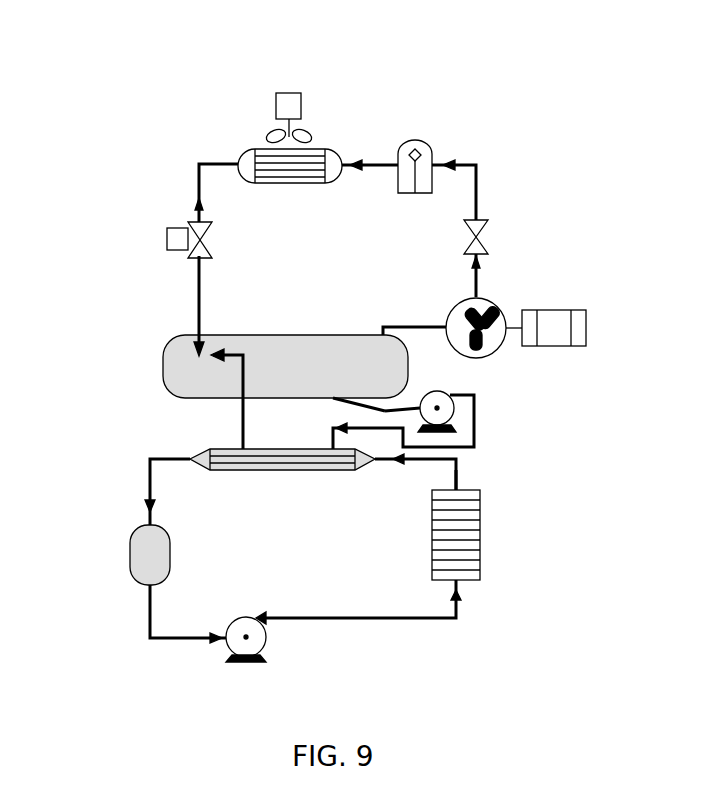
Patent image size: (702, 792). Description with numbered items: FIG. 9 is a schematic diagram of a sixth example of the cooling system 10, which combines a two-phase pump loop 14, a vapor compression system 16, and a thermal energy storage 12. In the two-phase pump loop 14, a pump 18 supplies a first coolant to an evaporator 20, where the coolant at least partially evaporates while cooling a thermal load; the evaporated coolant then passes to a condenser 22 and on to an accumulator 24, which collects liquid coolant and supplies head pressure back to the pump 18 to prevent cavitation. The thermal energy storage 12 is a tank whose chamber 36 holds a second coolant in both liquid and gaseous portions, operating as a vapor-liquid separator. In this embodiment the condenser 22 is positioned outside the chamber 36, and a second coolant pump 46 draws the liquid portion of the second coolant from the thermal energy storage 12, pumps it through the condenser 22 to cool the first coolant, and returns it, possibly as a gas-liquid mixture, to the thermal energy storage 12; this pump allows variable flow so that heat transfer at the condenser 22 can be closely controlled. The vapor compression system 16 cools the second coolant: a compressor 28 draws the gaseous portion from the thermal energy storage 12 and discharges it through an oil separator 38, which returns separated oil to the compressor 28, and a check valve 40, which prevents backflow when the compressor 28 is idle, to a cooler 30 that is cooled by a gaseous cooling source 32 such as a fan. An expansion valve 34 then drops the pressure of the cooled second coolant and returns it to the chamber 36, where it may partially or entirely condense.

The cooling system 10 is at (98, 172).
The thermal energy storage 12 is at (163, 374).
The two-phase pump loop 14 is at (125, 638).
The vapor compression system 16 is at (176, 146).
The pump 18 is at (268, 640).
The evaporator 20 is at (478, 578).
The condenser 22 is at (207, 470).
The accumulator 24 is at (130, 560).
The compressor 28 is at (498, 304).
The cooler 30 is at (322, 150).
The gaseous cooling source 32 is at (302, 94).
The expansion valve 34 is at (170, 231).
The chamber 36 is at (313, 381).
The oil separator 38 is at (430, 143).
The check valve 40 is at (486, 232).
The second coolant pump 46 is at (448, 397).